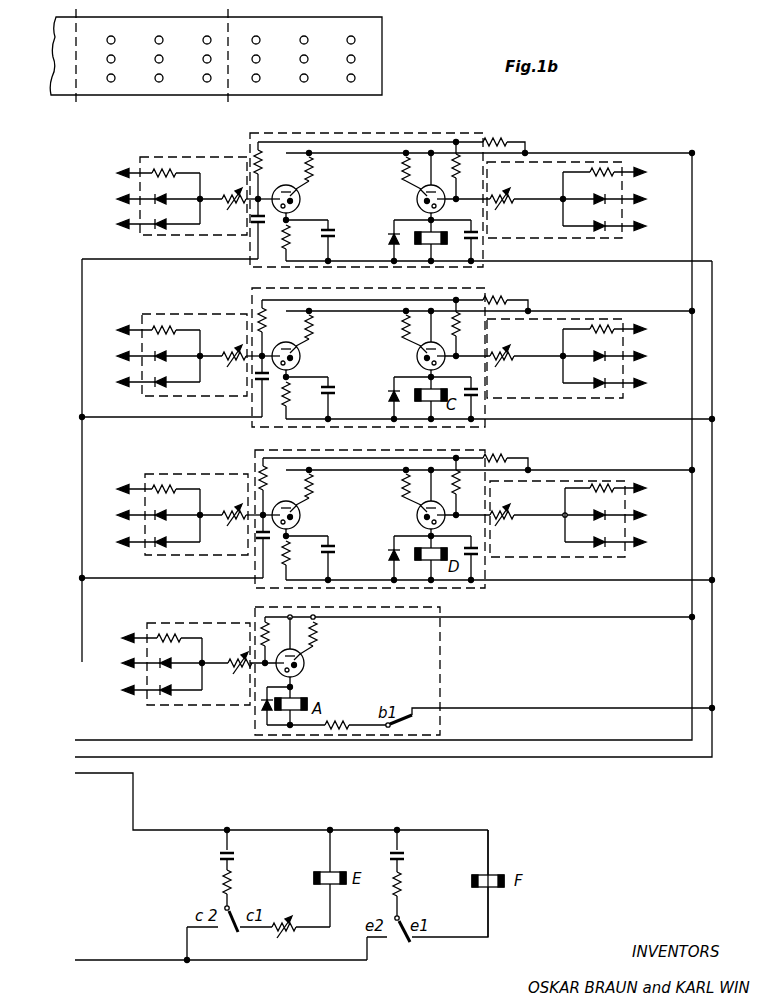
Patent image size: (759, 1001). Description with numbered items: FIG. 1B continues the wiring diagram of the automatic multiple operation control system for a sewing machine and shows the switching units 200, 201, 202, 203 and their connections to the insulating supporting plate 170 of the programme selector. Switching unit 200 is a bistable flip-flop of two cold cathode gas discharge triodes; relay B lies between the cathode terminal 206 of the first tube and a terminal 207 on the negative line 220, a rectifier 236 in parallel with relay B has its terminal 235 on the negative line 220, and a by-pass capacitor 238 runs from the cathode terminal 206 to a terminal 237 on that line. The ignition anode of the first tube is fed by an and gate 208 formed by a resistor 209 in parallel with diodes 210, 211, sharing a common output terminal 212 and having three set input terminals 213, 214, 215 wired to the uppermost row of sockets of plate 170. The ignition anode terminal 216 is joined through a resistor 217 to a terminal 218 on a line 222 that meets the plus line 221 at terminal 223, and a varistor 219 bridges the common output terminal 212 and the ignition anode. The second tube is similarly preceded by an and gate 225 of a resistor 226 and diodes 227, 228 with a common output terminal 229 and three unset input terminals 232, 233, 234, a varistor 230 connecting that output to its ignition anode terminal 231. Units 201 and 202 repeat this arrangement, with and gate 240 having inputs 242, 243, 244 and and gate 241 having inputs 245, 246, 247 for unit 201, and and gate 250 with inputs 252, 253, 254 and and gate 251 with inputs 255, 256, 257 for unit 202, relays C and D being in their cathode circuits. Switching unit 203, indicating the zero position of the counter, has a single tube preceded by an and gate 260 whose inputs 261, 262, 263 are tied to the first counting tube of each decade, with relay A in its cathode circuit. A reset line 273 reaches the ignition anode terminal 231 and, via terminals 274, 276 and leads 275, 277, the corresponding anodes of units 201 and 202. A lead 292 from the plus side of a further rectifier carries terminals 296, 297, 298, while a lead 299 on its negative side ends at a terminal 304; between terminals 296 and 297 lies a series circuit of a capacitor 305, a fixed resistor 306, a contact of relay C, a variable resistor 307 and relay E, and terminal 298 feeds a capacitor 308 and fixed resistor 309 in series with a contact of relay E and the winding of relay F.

The insulating supporting plate 170 is at (383, 80).
The switching unit 200 is at (348, 167).
The switching unit 201 is at (371, 366).
The switching unit 202 is at (376, 528).
The switching unit 203 is at (376, 682).
The cathode terminal 206 is at (434, 220).
The terminal 207 is at (431, 263).
The and gate 208 is at (530, 240).
The resistor 209 is at (597, 170).
The diode 210 is at (597, 206).
The diode 211 is at (600, 232).
The common output terminal 212 is at (561, 202).
The set input terminal 213 is at (641, 168).
The set input terminal 214 is at (640, 198).
The set input terminal 215 is at (640, 229).
The ignition anode terminal 216 is at (467, 190).
The resistor 217 is at (493, 147).
The terminal 218 is at (455, 142).
The varistor 219 is at (506, 197).
The negative line 220 is at (710, 447).
The plus line 221 is at (692, 246).
The line 222 is at (357, 142).
The terminal 223 is at (525, 150).
The and gate 225 is at (238, 140).
The resistor 226 is at (168, 170).
The diode 227 is at (166, 199).
The diode 228 is at (165, 226).
The common output terminal 229 is at (202, 201).
The varistor 230 is at (234, 197).
The ignition anode terminal 231 is at (259, 256).
The unset input terminal 232 is at (126, 168).
The unset input terminal 233 is at (118, 199).
The unset input terminal 234 is at (124, 228).
The terminal 235 is at (393, 263).
The rectifier 236 is at (387, 240).
The terminal 237 is at (471, 263).
The by-pass capacitor 238 is at (476, 239).
The and gate 240 is at (563, 398).
The and gate 241 is at (185, 325).
The input 242 is at (640, 330).
The input 243 is at (640, 357).
The input 244 is at (640, 384).
The input 245 is at (118, 332).
The input 246 is at (118, 356).
The input 247 is at (118, 382).
The and gate 250 is at (573, 557).
The and gate 251 is at (200, 485).
The input 252 is at (640, 489).
The input 253 is at (640, 516).
The input 254 is at (640, 543).
The input 255 is at (118, 490).
The input 256 is at (118, 516).
The input 257 is at (118, 543).
The and gate 260 is at (214, 628).
The input 261 is at (122, 638).
The input 262 is at (122, 663).
The input 263 is at (122, 690).
The reset line 273 is at (83, 446).
The terminal 274 is at (84, 418).
The lead 275 is at (232, 418).
The terminal 276 is at (84, 580).
The lead 277 is at (165, 580).
The lead 292 is at (98, 775).
The terminal 296 is at (232, 833).
The terminal 297 is at (331, 828).
The terminal 298 is at (398, 828).
The lead 299 is at (96, 960).
The terminal 304 is at (190, 963).
The capacitor 305 is at (238, 861).
The fixed resistor 306 is at (222, 884).
The variable resistor 307 is at (300, 925).
The capacitor 308 is at (407, 858).
The fixed resistor 309 is at (403, 883).